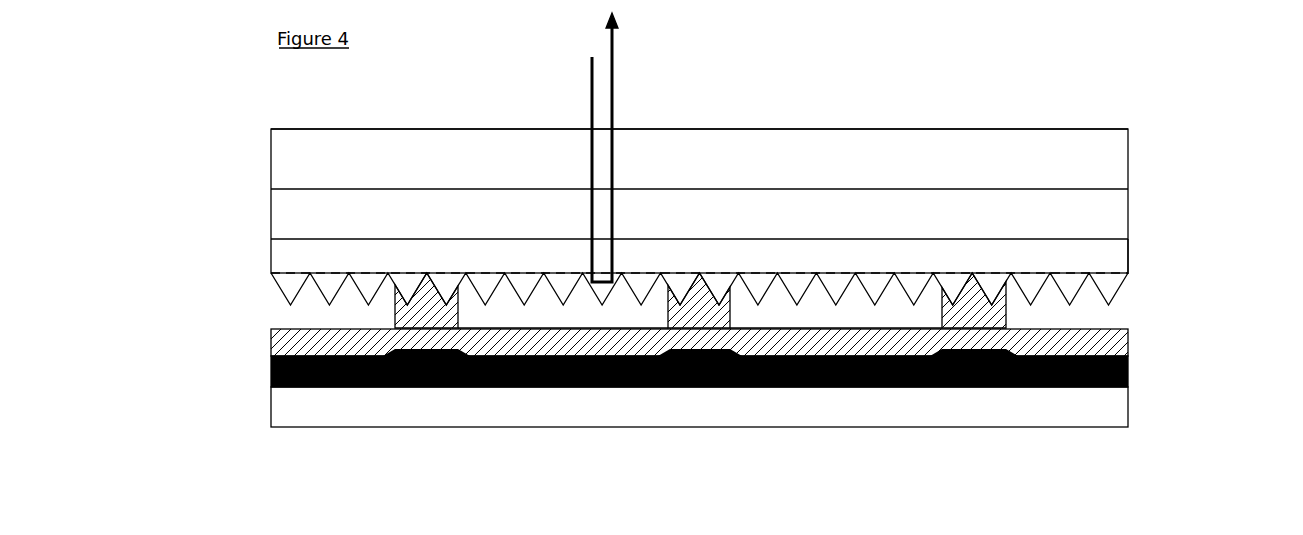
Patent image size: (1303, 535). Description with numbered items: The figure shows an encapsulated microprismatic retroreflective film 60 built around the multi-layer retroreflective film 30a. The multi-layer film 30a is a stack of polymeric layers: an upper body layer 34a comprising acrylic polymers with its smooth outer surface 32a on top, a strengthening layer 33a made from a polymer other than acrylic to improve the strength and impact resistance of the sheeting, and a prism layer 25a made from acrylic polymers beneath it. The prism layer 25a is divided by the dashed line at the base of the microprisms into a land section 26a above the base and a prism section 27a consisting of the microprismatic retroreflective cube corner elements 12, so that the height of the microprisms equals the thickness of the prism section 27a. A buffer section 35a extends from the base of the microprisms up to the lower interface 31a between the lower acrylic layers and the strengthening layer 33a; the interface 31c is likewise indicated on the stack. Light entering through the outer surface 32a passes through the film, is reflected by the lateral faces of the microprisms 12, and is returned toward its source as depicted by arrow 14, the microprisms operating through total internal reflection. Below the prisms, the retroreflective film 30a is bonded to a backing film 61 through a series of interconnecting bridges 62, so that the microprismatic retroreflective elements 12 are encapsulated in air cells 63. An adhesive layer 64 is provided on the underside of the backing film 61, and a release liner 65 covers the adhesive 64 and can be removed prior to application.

The arrow 14 is at (618, 72).
The multi-layer retroreflective film 30a is at (223, 305).
The top major surface 32a is at (454, 129).
The upper body layer 34a is at (1113, 157).
The strengthening layer 33a is at (1110, 208).
The buffer section 35a is at (1138, 239).
The prism layer 25a is at (1196, 239).
The land section 26a is at (265, 239).
The prism section 27a is at (253, 288).
The lower interface 31a is at (1060, 240).
The structured surface 31c is at (1018, 5).
The encapsulated microprismatic retroreflective film 60 is at (1057, 66).
The interconnecting bridges 62 is at (709, 297).
The backing film 61 is at (276, 345).
The adhesive layer 64 is at (276, 388).
The release liner 65 is at (352, 413).
The microprismatic retroreflective cube corner elements 12 is at (642, 287).
The air cells 63 is at (582, 317).